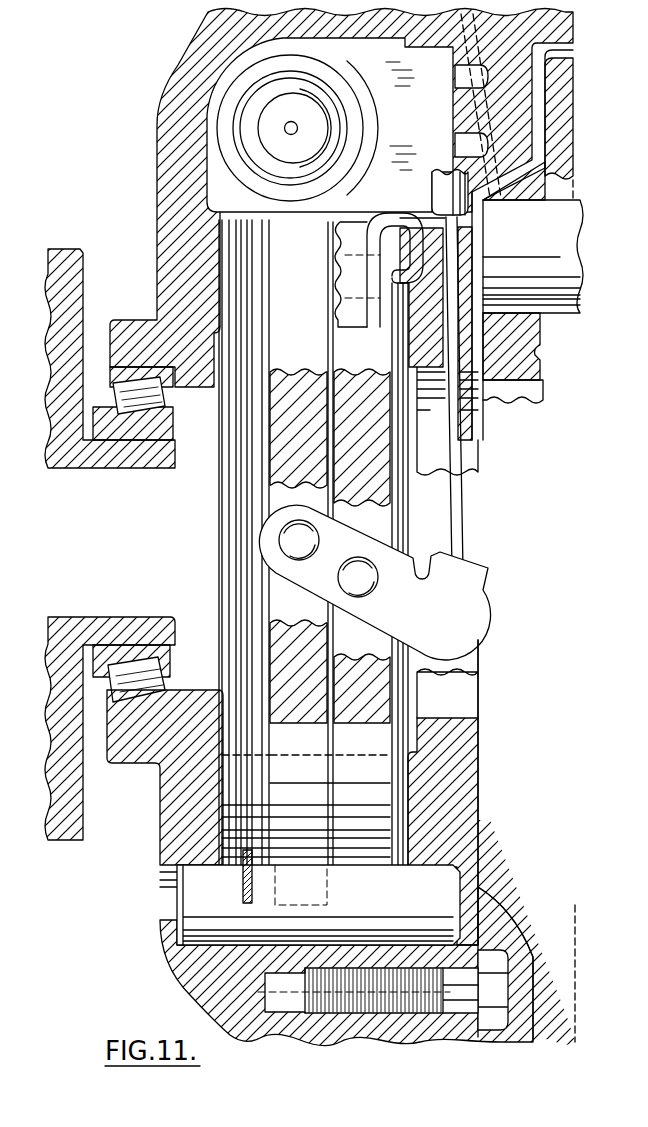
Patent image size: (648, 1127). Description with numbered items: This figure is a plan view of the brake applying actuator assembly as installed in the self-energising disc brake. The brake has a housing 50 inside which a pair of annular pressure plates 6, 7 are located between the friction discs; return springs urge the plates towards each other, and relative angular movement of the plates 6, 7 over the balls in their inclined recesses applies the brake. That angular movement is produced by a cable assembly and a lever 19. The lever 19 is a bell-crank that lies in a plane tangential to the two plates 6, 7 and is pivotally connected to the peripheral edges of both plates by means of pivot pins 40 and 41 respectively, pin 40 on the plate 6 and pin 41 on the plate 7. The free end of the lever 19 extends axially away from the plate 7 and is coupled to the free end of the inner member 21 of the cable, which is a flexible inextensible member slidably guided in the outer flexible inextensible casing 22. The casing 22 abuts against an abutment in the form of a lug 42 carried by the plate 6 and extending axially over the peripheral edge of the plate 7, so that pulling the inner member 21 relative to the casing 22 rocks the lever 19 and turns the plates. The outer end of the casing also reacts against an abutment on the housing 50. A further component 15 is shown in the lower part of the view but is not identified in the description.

The housing 50 is at (176, 189).
The casing 22 is at (449, 190).
The lug 42 is at (467, 220).
The pressure plate 6 is at (290, 390).
The pressure plate 7 is at (353, 417).
The inner member 21 is at (462, 498).
The lever 19 is at (392, 603).
The pivot pin 40 is at (305, 552).
The pivot pin 41 is at (370, 585).
The end plate 15 is at (298, 893).